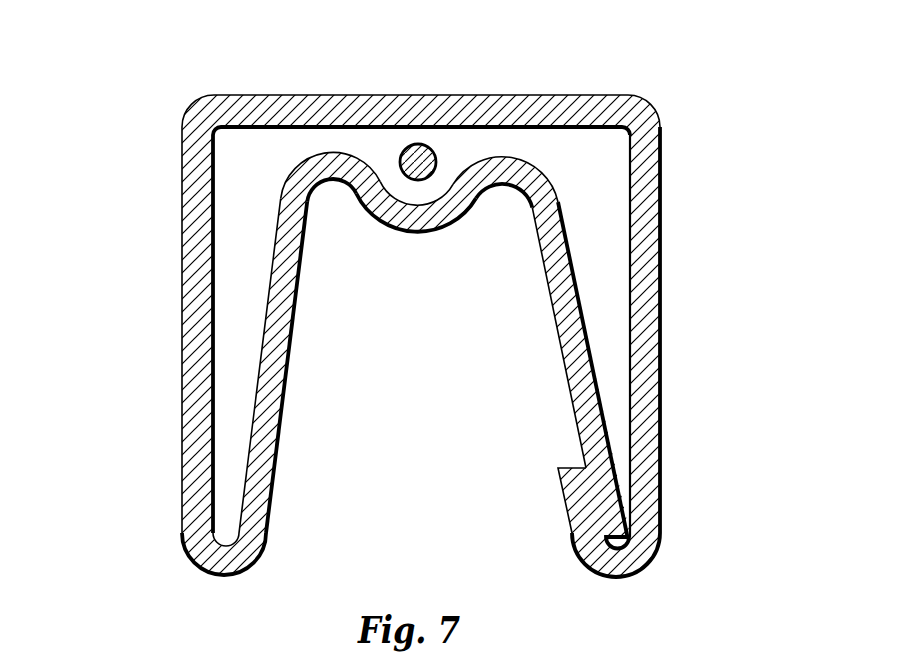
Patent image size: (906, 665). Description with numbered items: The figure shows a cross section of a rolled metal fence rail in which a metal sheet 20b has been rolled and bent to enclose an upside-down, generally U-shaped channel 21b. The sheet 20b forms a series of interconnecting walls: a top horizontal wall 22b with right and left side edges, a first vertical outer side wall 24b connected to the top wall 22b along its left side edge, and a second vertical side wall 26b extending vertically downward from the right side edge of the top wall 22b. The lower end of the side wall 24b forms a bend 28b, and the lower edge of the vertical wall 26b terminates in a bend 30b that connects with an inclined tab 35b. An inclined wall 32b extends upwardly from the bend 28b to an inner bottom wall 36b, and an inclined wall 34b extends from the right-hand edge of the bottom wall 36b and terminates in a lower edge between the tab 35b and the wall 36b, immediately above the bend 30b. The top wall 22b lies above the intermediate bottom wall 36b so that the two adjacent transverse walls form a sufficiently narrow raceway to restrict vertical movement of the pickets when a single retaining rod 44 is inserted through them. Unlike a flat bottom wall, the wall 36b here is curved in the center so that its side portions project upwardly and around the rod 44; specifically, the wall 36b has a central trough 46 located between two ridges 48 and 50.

The metal sheet 20b is at (647, 97).
The U-shaped channel 21b is at (245, 143).
The top horizontal wall 22b is at (552, 102).
The first vertical outer side wall 24b is at (196, 292).
The second vertical side wall 26b is at (657, 285).
The bend 28b is at (222, 565).
The bend 30b is at (623, 567).
The inclined wall 32b is at (270, 395).
The inclined wall 34b is at (580, 397).
The inclined tab 35b is at (582, 515).
The inner bottom wall 36b is at (530, 336).
The rod 44 is at (409, 146).
The central trough 46 is at (416, 236).
The ridge 48 is at (328, 152).
The ridge 50 is at (506, 153).